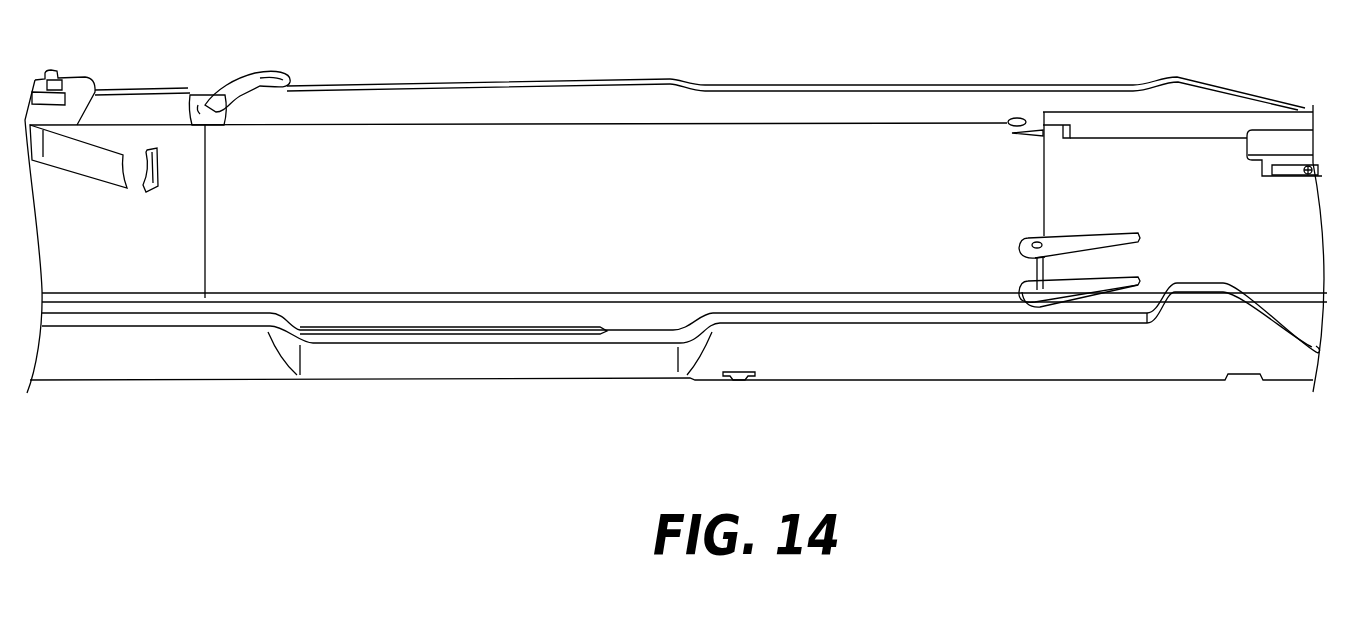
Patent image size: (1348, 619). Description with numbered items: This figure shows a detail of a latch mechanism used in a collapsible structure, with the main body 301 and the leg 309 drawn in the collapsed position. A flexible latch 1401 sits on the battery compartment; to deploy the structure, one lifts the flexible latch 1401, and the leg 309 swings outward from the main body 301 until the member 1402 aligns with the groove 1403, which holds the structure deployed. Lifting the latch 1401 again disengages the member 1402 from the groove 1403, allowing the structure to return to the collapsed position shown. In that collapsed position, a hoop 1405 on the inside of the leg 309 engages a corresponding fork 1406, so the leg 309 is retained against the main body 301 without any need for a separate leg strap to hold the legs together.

The main body 301 is at (815, 303).
The leg 309 is at (200, 380).
The flexible latch 1401 is at (265, 70).
The member 1402 is at (190, 100).
The groove 1403 is at (1007, 114).
The hoop 1405 is at (1268, 148).
The fork 1406 is at (1275, 180).